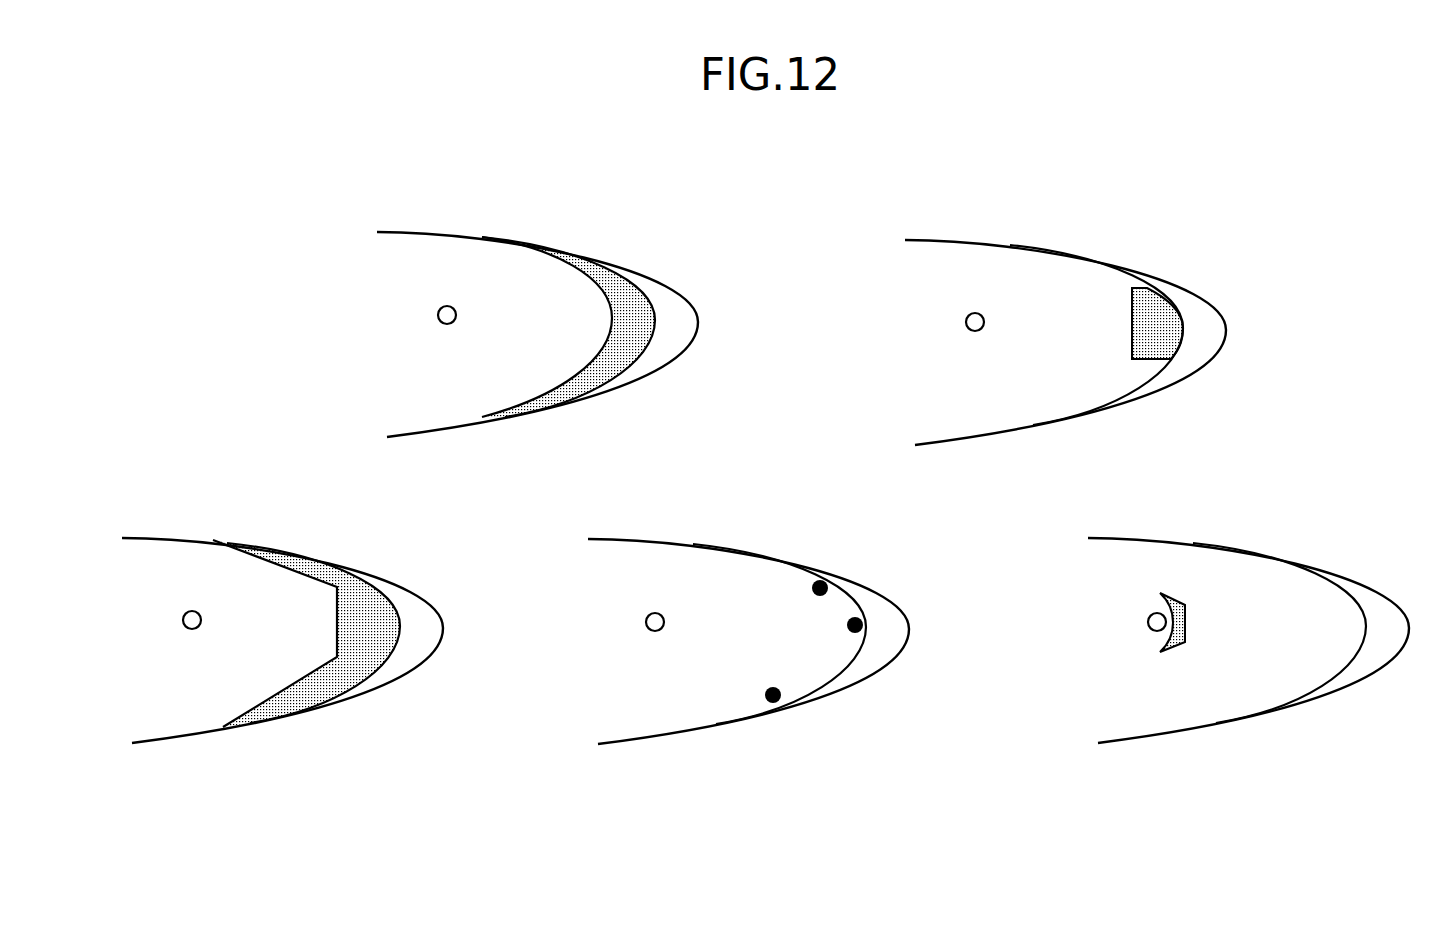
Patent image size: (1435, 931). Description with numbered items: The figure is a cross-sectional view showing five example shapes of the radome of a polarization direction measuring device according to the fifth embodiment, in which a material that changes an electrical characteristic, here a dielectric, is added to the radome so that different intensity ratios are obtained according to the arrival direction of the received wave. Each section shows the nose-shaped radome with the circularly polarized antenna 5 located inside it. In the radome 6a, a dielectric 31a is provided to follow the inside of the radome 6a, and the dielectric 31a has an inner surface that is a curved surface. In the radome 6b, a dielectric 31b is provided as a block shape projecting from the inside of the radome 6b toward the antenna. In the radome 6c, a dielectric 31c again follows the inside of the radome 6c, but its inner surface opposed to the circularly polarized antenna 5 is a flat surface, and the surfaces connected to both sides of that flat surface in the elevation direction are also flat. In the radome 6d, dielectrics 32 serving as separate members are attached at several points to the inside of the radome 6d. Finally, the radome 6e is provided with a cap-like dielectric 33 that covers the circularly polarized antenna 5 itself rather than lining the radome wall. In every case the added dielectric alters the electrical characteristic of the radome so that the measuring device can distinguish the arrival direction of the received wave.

The circularly polarized antenna 5 is at (437, 315).
The radome 6a is at (573, 186).
The radome 6b is at (1073, 187).
The radome 6c is at (249, 503).
The radome 6d is at (763, 503).
The radome 6e is at (1265, 503).
The dielectric 31a is at (632, 315).
The dielectric 31b is at (1152, 326).
The dielectric 31c is at (368, 622).
The dielectrics 32 is at (847, 624).
The cap-like dielectric 33 is at (1188, 621).